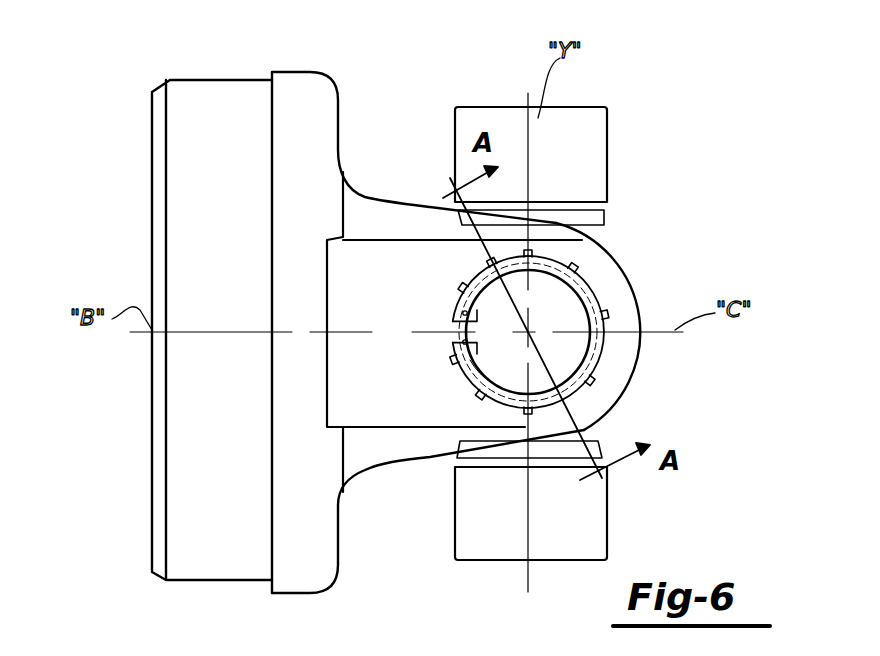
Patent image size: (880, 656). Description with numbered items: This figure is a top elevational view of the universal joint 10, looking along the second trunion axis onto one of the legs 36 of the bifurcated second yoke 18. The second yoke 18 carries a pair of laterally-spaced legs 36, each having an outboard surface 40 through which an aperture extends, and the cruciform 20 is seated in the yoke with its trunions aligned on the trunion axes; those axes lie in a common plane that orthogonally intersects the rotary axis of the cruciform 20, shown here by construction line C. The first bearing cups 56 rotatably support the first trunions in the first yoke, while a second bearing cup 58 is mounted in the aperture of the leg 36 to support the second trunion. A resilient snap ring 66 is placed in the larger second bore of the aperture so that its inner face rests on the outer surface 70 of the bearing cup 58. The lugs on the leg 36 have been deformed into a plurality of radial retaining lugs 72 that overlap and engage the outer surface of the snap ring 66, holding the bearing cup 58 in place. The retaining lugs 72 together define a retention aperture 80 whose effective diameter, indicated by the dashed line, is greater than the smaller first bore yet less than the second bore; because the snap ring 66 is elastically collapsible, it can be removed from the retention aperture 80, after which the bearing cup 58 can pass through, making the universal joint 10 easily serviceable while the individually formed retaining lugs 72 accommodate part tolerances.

The universal joint 10 is at (421, 112).
The second yoke 18 is at (298, 72).
The cruciform 20 is at (607, 198).
The legs 36 is at (637, 283).
The outboard surface 40 is at (400, 250).
The first bearing cups 56 is at (578, 153).
The second bearing cups 58 is at (577, 260).
The snap ring 66 is at (490, 352).
The outer surface 70 is at (573, 328).
The retaining lugs 72 is at (485, 260).
The retention aperture 80 is at (598, 360).